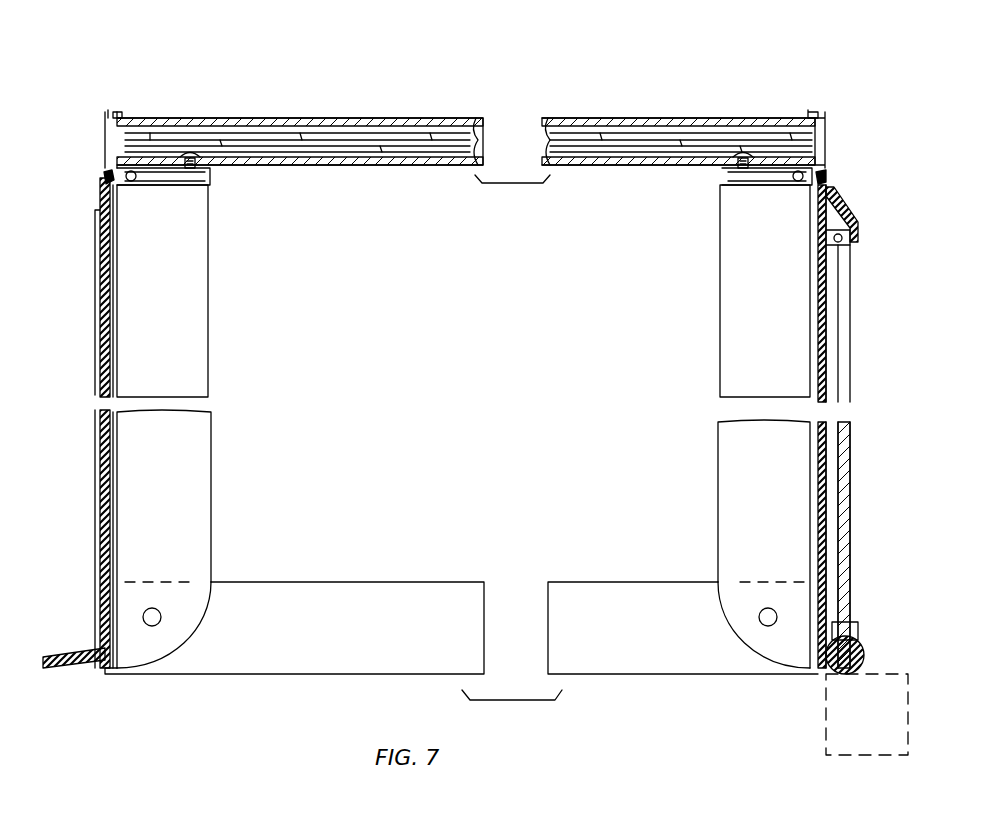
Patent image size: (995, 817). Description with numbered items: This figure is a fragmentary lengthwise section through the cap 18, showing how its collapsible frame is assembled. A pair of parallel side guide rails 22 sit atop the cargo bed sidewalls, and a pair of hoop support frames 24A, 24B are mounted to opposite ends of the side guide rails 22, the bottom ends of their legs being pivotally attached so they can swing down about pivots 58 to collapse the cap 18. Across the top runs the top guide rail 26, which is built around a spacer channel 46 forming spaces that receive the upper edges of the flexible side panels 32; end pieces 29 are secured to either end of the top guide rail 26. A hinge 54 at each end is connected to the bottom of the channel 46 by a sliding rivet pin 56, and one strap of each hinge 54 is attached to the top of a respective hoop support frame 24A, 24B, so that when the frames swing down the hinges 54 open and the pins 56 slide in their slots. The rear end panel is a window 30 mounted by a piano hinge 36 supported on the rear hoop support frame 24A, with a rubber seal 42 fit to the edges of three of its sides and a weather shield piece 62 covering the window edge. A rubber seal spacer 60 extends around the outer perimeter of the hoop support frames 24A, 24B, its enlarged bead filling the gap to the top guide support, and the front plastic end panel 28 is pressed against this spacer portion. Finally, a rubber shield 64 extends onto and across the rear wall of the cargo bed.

The cap 18 is at (186, 80).
The side guide rails 22 is at (282, 660).
The rear hoop support frame 24A is at (742, 312).
The hoop support frame 24B is at (193, 350).
The top guide rail 26 is at (566, 116).
The front plastic end panel 28 is at (852, 462).
The end pieces 29 is at (105, 114).
The window 30 is at (95, 275).
The flexible side panels 32 is at (336, 128).
The piano hinge 36 is at (850, 302).
The rubber seal 42 is at (856, 640).
The spacer channel 46 is at (447, 116).
The hinge 54 is at (189, 192).
The sliding rivet pin 56 is at (195, 166).
The pivots 58 is at (153, 627).
The rubber seal spacer 60 is at (100, 178).
The weather shield piece 62 is at (840, 213).
The rubber shield 64 is at (76, 656).